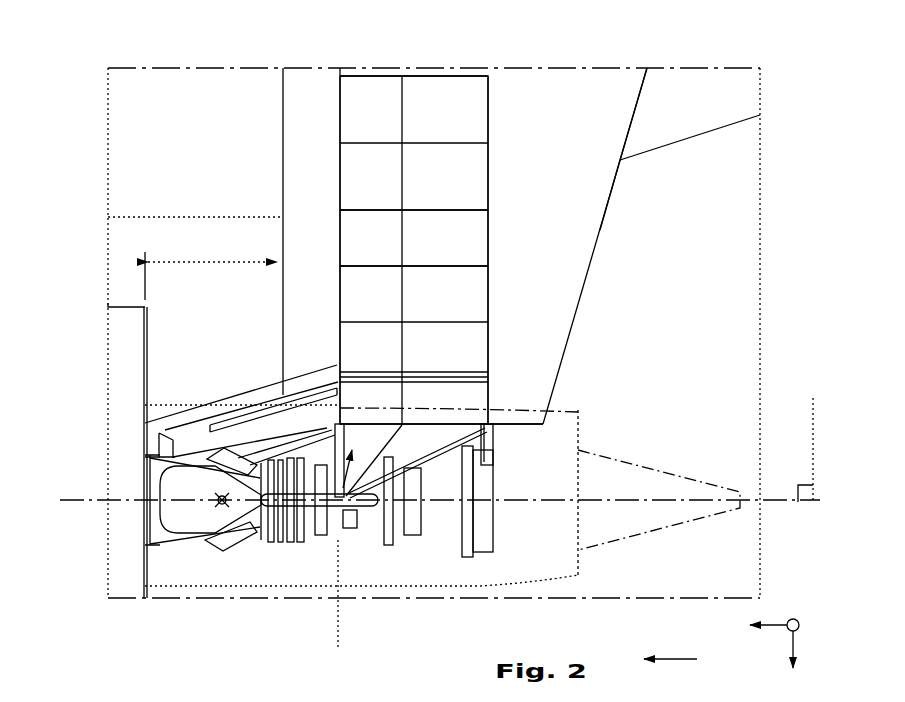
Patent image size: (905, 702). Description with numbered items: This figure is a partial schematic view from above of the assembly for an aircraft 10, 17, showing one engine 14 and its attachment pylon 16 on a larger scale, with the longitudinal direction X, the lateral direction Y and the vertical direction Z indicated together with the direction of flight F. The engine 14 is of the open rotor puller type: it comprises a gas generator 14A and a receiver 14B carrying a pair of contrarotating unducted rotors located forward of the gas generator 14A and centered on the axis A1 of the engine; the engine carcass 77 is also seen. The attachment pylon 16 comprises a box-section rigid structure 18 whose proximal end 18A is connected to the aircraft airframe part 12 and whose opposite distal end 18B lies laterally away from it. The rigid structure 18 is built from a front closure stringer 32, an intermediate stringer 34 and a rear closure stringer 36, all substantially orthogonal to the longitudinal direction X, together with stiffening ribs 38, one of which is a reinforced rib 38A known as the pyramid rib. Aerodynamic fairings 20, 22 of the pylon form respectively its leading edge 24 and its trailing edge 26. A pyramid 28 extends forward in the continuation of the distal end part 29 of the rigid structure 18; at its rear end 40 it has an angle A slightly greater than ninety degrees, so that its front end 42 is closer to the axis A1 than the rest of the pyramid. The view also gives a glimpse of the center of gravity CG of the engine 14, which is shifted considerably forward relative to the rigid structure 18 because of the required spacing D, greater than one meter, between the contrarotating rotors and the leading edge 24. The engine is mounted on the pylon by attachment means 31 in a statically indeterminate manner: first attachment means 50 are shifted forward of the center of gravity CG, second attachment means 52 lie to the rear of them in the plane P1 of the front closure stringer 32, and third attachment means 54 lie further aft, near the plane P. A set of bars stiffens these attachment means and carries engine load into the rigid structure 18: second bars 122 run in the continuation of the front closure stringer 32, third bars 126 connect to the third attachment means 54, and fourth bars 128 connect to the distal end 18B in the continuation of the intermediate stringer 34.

The aircraft 10 is at (405, 333).
The propulsion assembly 17 is at (116, 254).
The aircraft airframe part 12 is at (717, 133).
The engine 14 is at (566, 578).
The gas generator 14A is at (320, 542).
The receiver 14B is at (152, 566).
The attachment pylon 16 is at (620, 218).
The rigid structure 18 is at (492, 300).
The proximal end 18A is at (458, 78).
The distal end 18B is at (417, 427).
The aerodynamic fairing 20 is at (301, 178).
The aerodynamic fairing 22 is at (573, 192).
The leading edge 24 is at (268, 240).
The trailing edge 26 is at (598, 237).
The pyramid 28 is at (225, 412).
The distal end part 29 is at (358, 392).
The attachment means 31 is at (571, 440).
The third attachment means 54 is at (497, 441).
The front closure stringer 32 is at (337, 285).
The intermediate stringer 34 is at (398, 310).
The rear closure stringer 36 is at (487, 280).
The stiffening ribs 38 is at (420, 266).
The reinforced rib 38A is at (413, 370).
The rear end of the pyramid 40 is at (292, 425).
The front end of the pyramid 42 is at (165, 427).
The first attachment means 50 is at (147, 448).
The second attachment means 52 is at (378, 508).
The carcass 77 is at (250, 545).
The second bars 122 is at (270, 545).
The third bars 126 is at (450, 528).
The fourth bars 128 is at (425, 530).
The angle A is at (258, 426).
The axis of the engine A1 is at (100, 498).
The center of gravity CG is at (223, 506).
The spacing D is at (215, 262).
The plane P is at (810, 485).
The plane of the front closure stringer P1 is at (338, 613).
The flight direction F is at (670, 646).
The longitudinal direction X is at (765, 626).
The Y axis Y is at (781, 658).
The Z axis Z is at (809, 610).